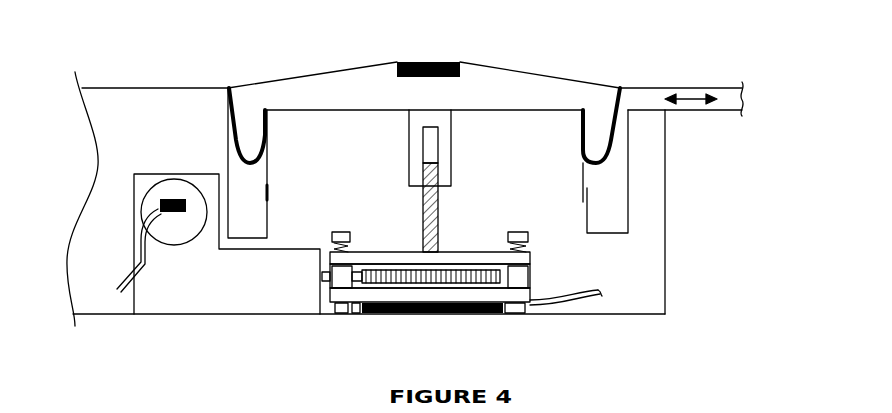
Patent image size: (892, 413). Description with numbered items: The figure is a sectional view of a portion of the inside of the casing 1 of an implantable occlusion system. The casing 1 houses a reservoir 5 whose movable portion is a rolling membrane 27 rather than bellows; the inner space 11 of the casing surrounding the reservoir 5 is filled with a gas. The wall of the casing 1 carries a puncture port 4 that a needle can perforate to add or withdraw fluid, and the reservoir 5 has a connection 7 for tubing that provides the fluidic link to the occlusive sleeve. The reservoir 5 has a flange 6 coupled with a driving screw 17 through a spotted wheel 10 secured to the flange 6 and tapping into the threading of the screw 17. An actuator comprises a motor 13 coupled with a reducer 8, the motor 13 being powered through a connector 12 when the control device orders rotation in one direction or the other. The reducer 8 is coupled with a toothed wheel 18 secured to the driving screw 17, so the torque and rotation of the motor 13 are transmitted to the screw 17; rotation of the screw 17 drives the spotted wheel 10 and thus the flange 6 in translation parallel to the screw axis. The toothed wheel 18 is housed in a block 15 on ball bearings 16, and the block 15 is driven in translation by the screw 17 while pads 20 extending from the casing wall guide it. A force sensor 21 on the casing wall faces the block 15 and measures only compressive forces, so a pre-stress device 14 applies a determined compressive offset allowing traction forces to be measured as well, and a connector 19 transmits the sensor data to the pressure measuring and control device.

The casing 1 is at (152, 90).
The puncture port 4 is at (427, 61).
The reservoir 5 is at (337, 81).
The flange 6 is at (473, 110).
The connection 7 is at (697, 90).
The reducer 8 is at (174, 176).
The spotted wheel 10 is at (453, 167).
The inner space 11 is at (651, 220).
The connector 12 is at (128, 282).
The motor 13 is at (172, 245).
The pre-stress device 14 is at (340, 232).
The block 15 is at (362, 252).
The ball bearings 16 is at (398, 270).
The driving screw 17 is at (440, 250).
The toothed wheel 18 is at (481, 270).
The connector 19 is at (588, 288).
The pads 20 is at (333, 314).
The force sensor 21 is at (268, 194).
The rolling membrane 27 is at (242, 130).